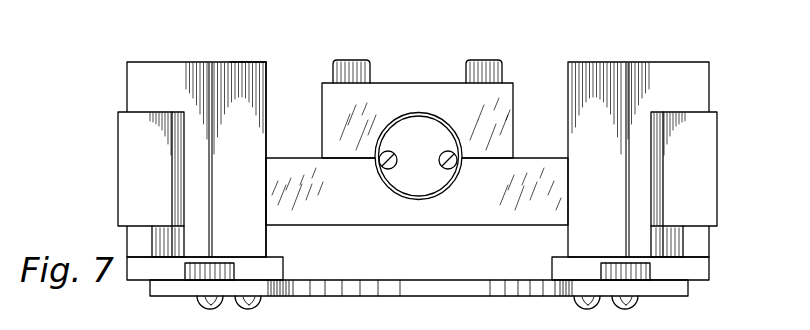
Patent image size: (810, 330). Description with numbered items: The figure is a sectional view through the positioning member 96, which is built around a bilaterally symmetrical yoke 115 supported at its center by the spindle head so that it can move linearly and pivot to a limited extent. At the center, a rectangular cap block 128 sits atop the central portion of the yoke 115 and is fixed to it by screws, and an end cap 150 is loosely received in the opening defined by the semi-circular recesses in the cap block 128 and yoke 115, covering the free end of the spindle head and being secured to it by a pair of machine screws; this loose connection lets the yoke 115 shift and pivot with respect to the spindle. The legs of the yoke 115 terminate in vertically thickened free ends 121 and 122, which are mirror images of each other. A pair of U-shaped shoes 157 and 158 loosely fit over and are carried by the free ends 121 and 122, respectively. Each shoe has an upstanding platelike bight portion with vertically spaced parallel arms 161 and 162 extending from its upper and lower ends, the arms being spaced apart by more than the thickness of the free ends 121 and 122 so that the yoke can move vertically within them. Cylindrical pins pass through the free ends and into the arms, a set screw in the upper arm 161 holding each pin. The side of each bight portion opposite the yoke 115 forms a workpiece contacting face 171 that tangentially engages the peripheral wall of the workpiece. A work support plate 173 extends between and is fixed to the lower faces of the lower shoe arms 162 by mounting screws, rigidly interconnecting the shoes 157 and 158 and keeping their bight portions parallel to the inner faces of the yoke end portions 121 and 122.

The positioning member 96 is at (116, 62).
The yoke 115 is at (540, 227).
The free end portion of leg 121 is at (122, 160).
The free end portion of leg 122 is at (711, 172).
The cap block 128 is at (508, 103).
The end cap 150 is at (430, 197).
The shoe 157 is at (251, 58).
The shoe 158 is at (695, 58).
The upper arm 161 is at (178, 43).
The lower arm 162 is at (143, 272).
The workpiece contacting face 171 is at (254, 122).
The work support plate 173 is at (384, 288).